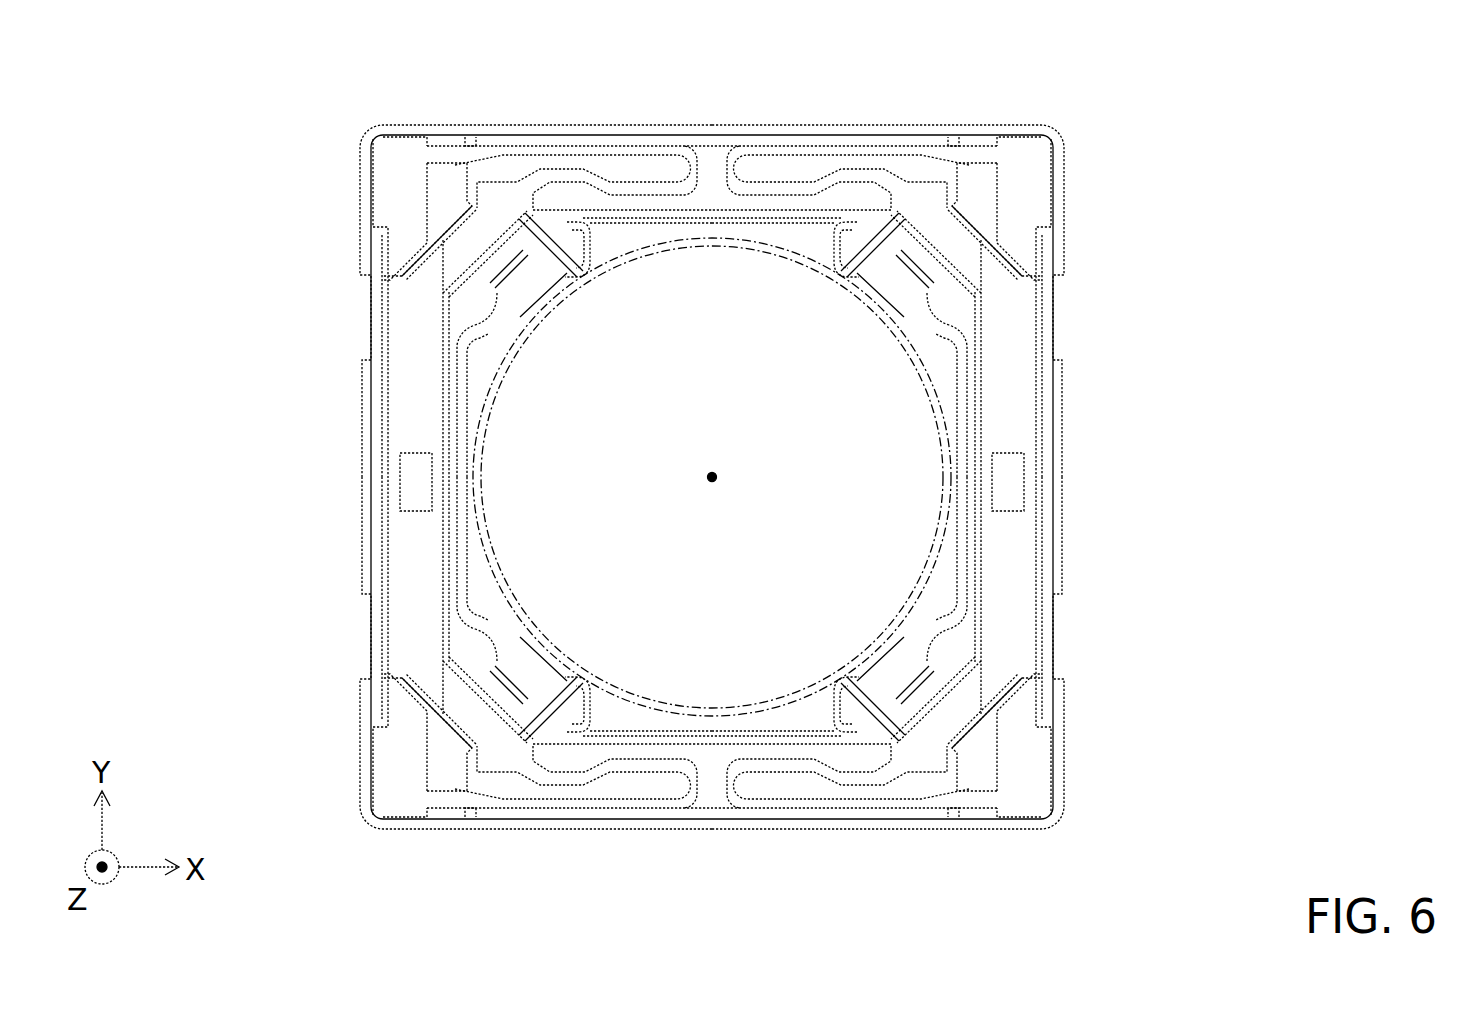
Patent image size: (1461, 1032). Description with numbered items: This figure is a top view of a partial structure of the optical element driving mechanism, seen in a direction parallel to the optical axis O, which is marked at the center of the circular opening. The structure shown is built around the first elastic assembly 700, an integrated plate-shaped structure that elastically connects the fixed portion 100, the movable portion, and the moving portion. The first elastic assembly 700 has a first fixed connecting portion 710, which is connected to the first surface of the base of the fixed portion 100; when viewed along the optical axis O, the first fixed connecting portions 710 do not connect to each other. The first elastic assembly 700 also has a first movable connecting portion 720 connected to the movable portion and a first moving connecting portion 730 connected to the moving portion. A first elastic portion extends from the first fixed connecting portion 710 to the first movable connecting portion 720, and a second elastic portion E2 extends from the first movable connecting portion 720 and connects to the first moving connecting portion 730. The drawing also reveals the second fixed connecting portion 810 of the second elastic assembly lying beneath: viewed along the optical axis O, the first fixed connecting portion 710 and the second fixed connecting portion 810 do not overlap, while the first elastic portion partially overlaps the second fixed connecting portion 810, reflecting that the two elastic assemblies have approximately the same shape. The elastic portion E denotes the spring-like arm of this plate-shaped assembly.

The fixed portion 100 is at (590, 122).
The first elastic assembly 700 is at (1058, 134).
The first fixed connecting portion 710 is at (1030, 192).
The first movable connecting portion 720 is at (928, 208).
The first moving connecting portion 730 is at (915, 675).
The second fixed connecting portion 810 is at (978, 187).
The elastic element E is at (832, 150).
The second elastic portion E2 is at (980, 527).
The optical axis O is at (712, 477).